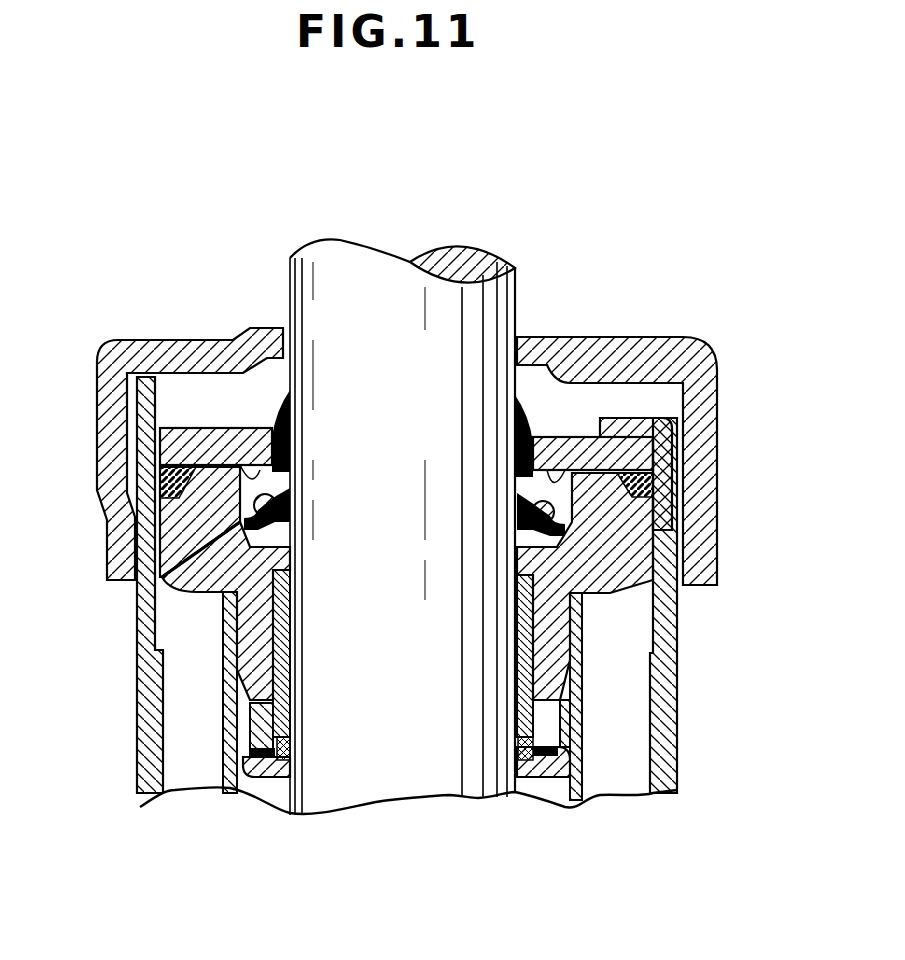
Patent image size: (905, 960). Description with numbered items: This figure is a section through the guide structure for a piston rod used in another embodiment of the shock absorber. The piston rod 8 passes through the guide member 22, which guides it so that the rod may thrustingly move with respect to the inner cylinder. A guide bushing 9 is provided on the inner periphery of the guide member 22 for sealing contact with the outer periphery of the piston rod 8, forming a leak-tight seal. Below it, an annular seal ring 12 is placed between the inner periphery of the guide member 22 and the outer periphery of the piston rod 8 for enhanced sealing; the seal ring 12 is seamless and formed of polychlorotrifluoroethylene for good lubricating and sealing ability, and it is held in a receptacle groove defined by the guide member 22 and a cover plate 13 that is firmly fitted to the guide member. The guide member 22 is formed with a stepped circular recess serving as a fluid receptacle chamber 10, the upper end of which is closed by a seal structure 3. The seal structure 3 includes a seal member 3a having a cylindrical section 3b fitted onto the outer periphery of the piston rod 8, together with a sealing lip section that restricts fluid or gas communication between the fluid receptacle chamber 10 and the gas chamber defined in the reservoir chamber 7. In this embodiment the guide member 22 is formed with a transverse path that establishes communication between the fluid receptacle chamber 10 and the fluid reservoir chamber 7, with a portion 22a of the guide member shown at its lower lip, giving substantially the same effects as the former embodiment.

The seal structure 3 is at (567, 436).
The seal member 3a is at (291, 464).
The cylindrical section 3b is at (288, 507).
The reservoir chamber 7 is at (205, 755).
The piston rod 8 is at (515, 290).
The guide bushing 9 is at (527, 667).
The fluid receptacle chamber 10 is at (247, 520).
The seal ring 12 is at (583, 767).
The cover plate 13 is at (533, 782).
The guide member 22 is at (417, 514).
The housing lip 22a is at (192, 573).